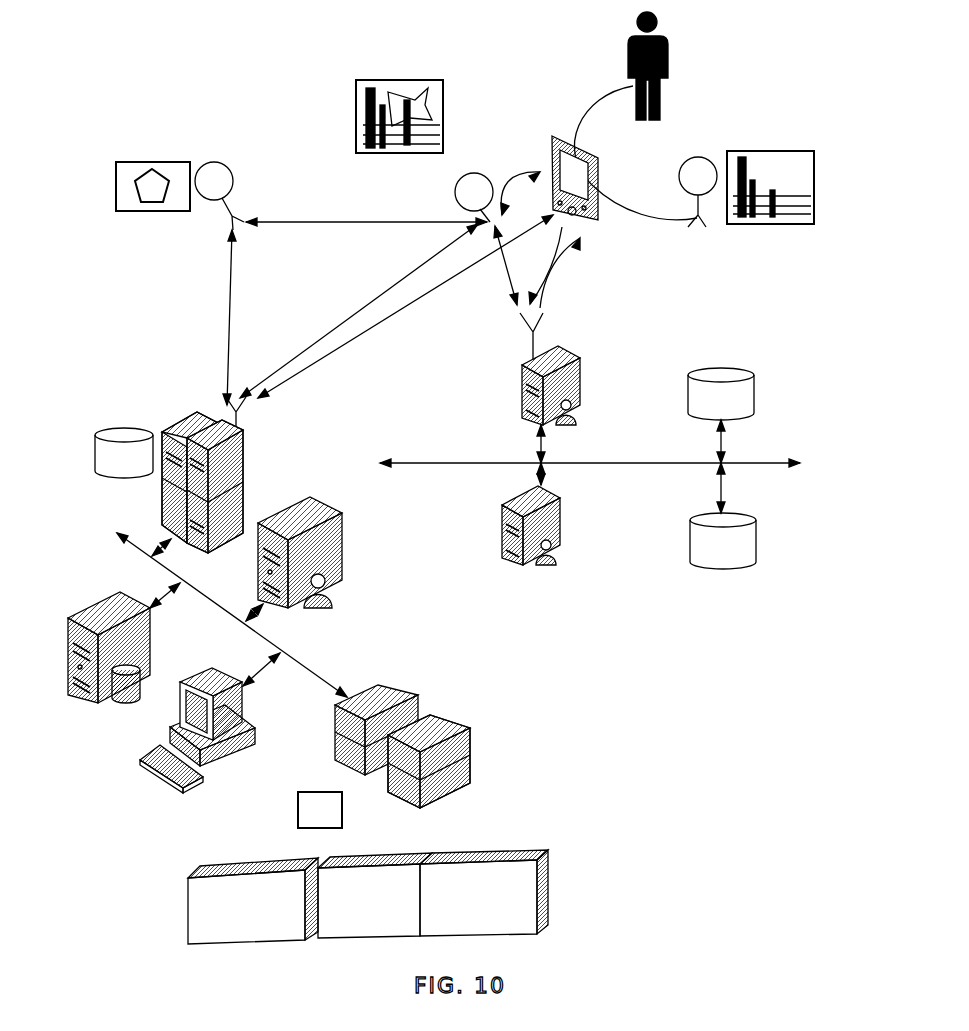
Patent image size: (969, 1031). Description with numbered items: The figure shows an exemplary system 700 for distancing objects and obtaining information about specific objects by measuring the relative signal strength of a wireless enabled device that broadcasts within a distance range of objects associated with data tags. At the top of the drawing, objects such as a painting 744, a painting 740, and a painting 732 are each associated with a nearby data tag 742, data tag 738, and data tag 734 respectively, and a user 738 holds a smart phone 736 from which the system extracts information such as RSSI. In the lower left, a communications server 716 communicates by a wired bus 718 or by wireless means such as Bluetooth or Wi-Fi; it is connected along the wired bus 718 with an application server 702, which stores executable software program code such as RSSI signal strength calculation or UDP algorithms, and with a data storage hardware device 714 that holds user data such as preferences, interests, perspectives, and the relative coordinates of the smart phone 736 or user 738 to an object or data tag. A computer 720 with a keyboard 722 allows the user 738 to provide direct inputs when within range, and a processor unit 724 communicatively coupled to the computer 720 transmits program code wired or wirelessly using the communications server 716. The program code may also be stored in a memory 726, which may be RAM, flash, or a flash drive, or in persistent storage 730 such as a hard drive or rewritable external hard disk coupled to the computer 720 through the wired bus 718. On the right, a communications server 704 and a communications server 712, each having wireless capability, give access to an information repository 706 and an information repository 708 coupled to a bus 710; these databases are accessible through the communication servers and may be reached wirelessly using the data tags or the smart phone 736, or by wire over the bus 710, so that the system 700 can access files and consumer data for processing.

The system 700 is at (692, 625).
The application server 702 is at (307, 517).
The communications server 704 is at (550, 345).
The information repository 706 is at (712, 368).
The information repository 708 is at (687, 538).
The bus 710 is at (636, 463).
The communications server 712 is at (512, 560).
The data storage hardware device 714 is at (125, 437).
The communications server 716 is at (245, 445).
The wired bus 718 is at (220, 605).
The computer 720 is at (237, 753).
The keyboard 722 is at (160, 778).
The processor unit 724 is at (342, 800).
The memory 726 is at (435, 860).
The persistent storage 730 is at (435, 720).
The painting 732 is at (775, 168).
The data tag 734 is at (680, 157).
The smart phone 736 is at (567, 137).
The user 738 is at (468, 184).
The painting 740 is at (430, 95).
The data tag 742 is at (208, 170).
The painting 744 is at (120, 158).